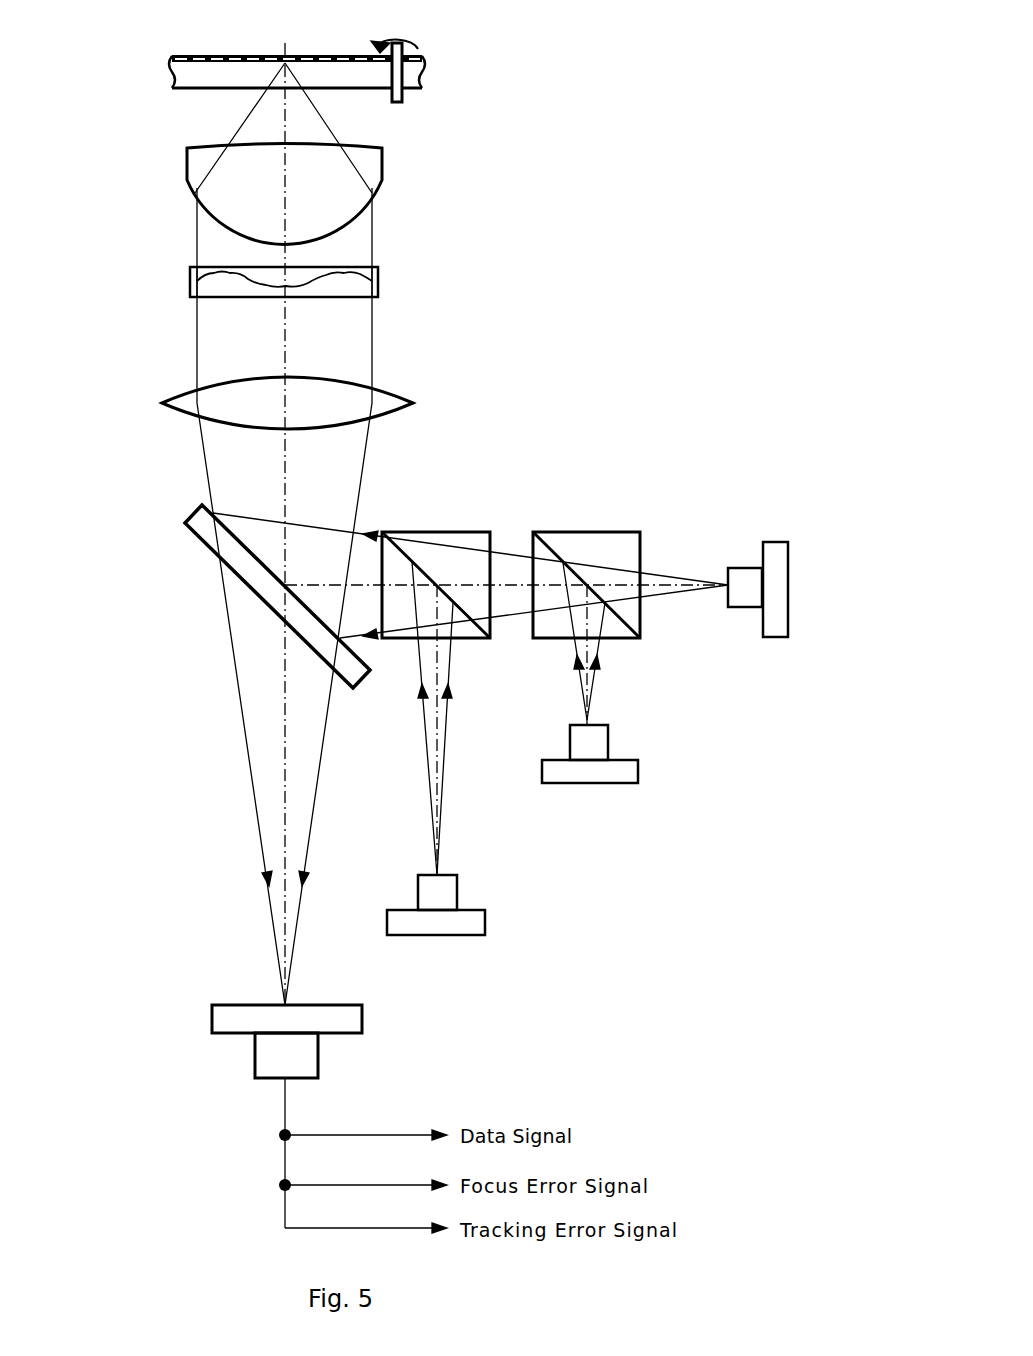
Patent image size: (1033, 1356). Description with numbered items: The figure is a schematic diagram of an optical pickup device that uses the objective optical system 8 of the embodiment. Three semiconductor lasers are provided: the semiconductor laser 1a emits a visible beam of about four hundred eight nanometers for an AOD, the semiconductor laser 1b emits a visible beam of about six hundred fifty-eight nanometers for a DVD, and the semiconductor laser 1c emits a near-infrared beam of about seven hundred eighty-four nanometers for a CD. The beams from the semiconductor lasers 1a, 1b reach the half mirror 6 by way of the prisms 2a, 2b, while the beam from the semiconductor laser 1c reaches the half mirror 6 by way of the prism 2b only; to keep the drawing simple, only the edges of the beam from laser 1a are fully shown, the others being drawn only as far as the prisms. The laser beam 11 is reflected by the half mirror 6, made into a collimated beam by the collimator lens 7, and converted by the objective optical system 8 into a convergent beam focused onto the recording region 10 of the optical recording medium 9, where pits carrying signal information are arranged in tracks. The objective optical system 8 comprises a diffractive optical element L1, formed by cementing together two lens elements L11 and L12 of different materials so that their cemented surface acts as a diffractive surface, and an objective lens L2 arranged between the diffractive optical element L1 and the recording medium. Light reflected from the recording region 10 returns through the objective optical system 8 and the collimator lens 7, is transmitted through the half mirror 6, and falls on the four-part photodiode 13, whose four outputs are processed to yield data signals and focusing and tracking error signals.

The recording region 10 is at (203, 57).
The optical recording medium 9 is at (447, 111).
The objective optical system 8 is at (429, 225).
The objective lens L2 is at (195, 176).
The diffractive optical element L1 is at (158, 266).
The lens element L11 is at (378, 286).
The lens element L12 is at (378, 273).
The collimator lens 7 is at (397, 405).
The half mirror 6 is at (203, 527).
The laser beam 11 is at (380, 530).
The prism 2b is at (470, 537).
The prism 2a is at (610, 540).
The semiconductor laser 1a is at (740, 568).
The semiconductor laser 1b is at (610, 742).
The semiconductor laser 1c is at (457, 890).
The four-part photodiode 13 is at (362, 1027).